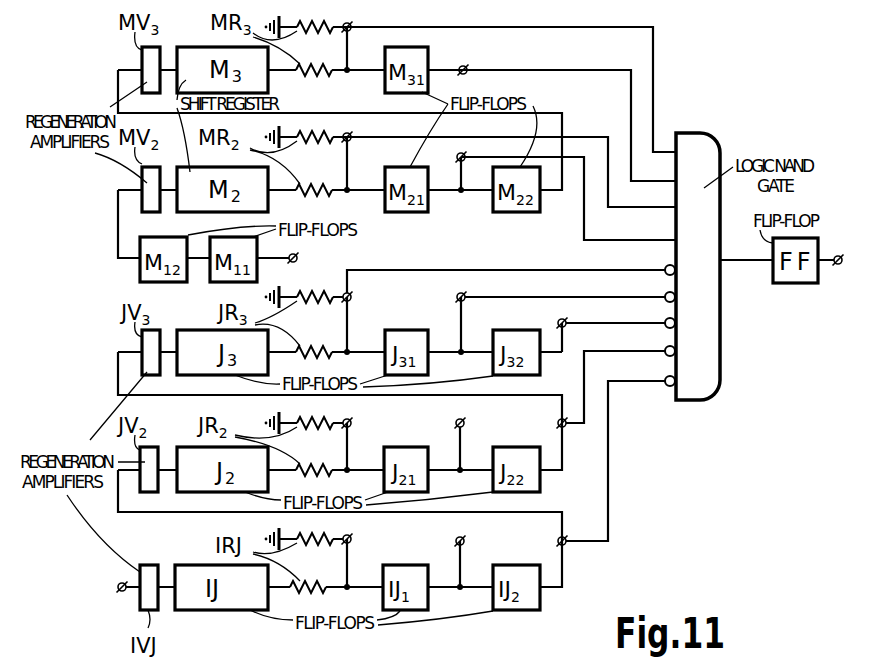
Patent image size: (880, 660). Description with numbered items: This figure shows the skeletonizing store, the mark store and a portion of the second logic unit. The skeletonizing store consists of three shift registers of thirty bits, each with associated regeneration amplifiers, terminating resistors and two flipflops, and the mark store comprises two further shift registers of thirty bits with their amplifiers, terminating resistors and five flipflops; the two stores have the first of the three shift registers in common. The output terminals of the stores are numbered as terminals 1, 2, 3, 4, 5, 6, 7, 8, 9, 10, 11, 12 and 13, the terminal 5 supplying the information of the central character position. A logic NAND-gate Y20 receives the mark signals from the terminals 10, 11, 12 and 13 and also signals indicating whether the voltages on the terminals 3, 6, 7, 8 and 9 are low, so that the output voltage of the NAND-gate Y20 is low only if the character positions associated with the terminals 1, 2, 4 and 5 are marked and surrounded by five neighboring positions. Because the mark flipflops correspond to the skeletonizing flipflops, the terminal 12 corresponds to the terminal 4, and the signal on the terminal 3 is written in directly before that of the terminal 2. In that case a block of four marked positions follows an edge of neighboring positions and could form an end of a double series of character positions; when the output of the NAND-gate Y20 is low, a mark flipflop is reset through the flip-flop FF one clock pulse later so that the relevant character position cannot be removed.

The output terminal 1 is at (351, 537).
The output terminal 2 is at (464, 538).
The output terminal 3 is at (565, 544).
The output terminal 4 is at (351, 421).
The output terminal 5 is at (464, 420).
The output terminal 6 is at (565, 426).
The output terminal 7 is at (351, 294).
The output terminal 8 is at (458, 295).
The output terminal 9 is at (559, 321).
The output terminal 10 is at (351, 140).
The output terminal 11 is at (457, 157).
The output terminal 12 is at (351, 30).
The output terminal 13 is at (466, 67).
The logic NAND-gate Y20 is at (686, 406).